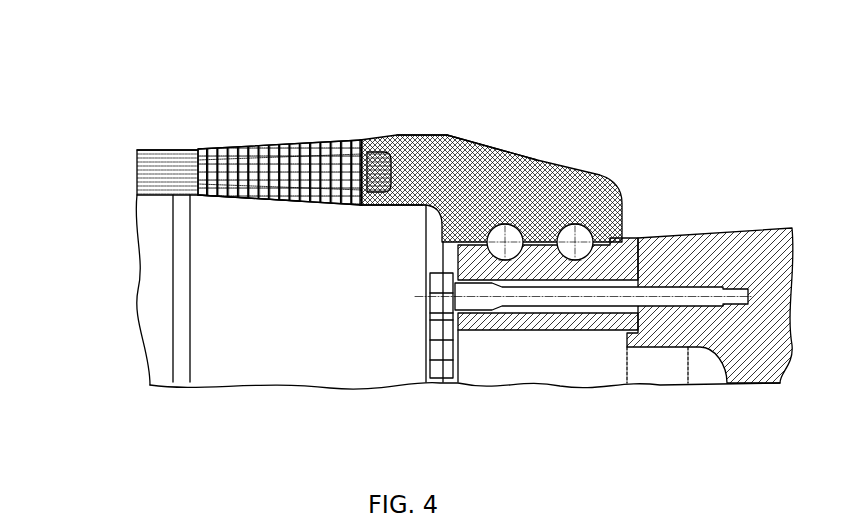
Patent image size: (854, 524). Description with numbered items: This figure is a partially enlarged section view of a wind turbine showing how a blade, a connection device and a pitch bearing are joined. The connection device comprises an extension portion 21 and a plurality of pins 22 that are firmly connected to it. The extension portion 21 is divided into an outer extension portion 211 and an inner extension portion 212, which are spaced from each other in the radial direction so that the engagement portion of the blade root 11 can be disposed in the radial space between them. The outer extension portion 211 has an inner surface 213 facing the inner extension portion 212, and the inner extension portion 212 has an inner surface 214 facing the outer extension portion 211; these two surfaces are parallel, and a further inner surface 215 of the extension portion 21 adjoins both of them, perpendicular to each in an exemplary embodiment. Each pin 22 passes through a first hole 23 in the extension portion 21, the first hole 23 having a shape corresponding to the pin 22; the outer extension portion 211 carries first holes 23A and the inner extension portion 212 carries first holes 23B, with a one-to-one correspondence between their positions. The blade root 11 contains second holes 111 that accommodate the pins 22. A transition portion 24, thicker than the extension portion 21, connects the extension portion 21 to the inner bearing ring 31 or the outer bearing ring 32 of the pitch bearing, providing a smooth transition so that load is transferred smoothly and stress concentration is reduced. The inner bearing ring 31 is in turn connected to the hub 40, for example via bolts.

The blade root 11 is at (408, 221).
The second hole 111 is at (183, 148).
The pin 22 is at (353, 155).
The inner surface of the outer extension portion 213 is at (237, 150).
The first hole 23 is at (353, 102).
The first hole of the outer extension portion 23A is at (307, 142).
The first hole of the inner extension portion 23B is at (332, 142).
The extension portion 21 is at (466, 181).
The outer extension portion 211 is at (373, 138).
The inner surface of the extension portion 215 is at (447, 138).
The inner extension portion 212 is at (377, 207).
The inner surface of the inner extension portion 214 is at (302, 202).
The transition portion 24 is at (413, 207).
The outer bearing ring 32 is at (535, 157).
The inner bearing ring 31 is at (570, 323).
The hub 40 is at (697, 237).